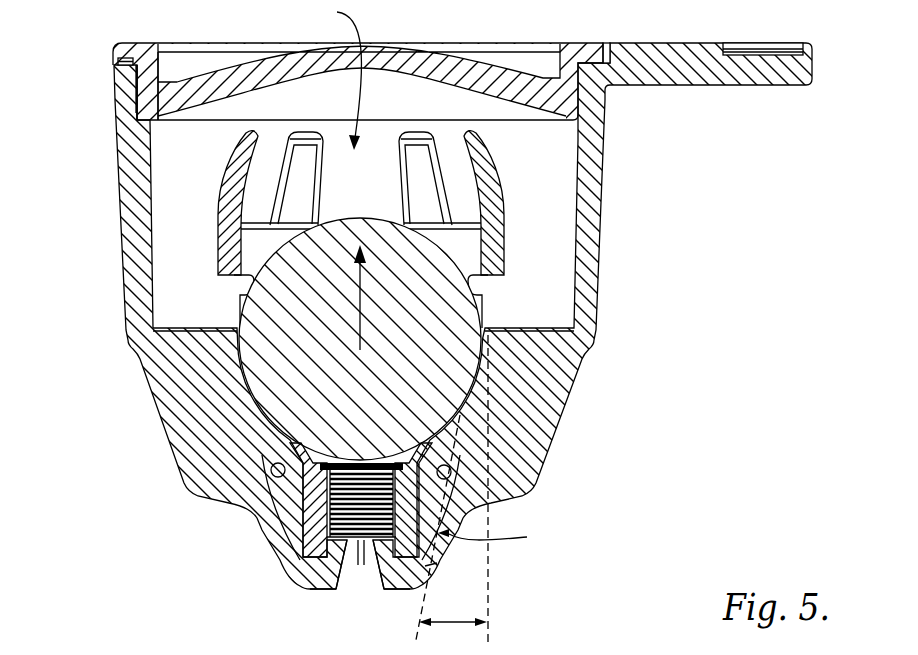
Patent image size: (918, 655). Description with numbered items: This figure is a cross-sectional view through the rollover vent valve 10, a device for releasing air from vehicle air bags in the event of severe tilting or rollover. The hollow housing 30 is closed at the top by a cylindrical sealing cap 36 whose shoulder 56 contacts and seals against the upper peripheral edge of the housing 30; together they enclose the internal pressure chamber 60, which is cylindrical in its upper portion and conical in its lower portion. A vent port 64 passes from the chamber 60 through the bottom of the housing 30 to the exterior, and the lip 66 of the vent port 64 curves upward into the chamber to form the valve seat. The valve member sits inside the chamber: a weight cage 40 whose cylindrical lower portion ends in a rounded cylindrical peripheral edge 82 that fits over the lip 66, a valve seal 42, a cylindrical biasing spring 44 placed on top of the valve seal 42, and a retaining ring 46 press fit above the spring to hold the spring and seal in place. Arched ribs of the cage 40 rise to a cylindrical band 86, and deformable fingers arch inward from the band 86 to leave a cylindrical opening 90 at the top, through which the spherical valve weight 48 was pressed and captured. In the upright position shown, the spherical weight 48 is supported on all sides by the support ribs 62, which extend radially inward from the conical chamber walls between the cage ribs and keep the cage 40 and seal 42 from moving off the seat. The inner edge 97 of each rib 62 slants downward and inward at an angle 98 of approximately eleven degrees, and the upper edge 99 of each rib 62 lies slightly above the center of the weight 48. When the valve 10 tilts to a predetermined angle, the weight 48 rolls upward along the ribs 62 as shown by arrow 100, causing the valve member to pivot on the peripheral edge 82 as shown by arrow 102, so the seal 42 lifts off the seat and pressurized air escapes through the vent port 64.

The rollover vent valve 10 is at (759, 475).
The housing 30 is at (133, 263).
The sealing cap 36 is at (413, 52).
The weight cage 40 is at (497, 258).
The valve seal 42 is at (353, 587).
The biasing spring 44 is at (452, 521).
The retaining ring 46 is at (312, 455).
The spherical valve weight 48 is at (278, 365).
The shoulder 56 is at (140, 56).
The internal pressure chamber 60 is at (545, 163).
The support ribs 62 is at (200, 365).
The vent port 64 is at (362, 580).
The lip 66 is at (323, 586).
The rounded cylindrical peripheral edge 82 is at (425, 566).
The cylindrical band 86 is at (462, 246).
The cylindrical opening 90 is at (337, 12).
The inner edge 97 is at (460, 447).
The angle 98 is at (452, 622).
The upper edge 99 is at (520, 328).
The arrow 100 is at (362, 303).
The arrow 102 is at (501, 539).